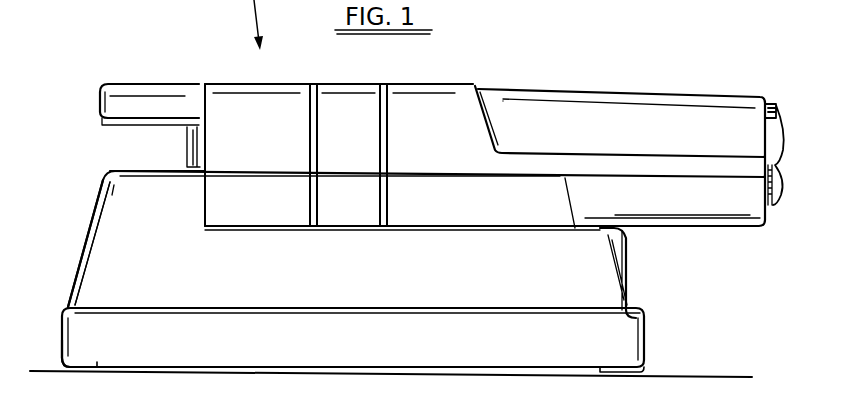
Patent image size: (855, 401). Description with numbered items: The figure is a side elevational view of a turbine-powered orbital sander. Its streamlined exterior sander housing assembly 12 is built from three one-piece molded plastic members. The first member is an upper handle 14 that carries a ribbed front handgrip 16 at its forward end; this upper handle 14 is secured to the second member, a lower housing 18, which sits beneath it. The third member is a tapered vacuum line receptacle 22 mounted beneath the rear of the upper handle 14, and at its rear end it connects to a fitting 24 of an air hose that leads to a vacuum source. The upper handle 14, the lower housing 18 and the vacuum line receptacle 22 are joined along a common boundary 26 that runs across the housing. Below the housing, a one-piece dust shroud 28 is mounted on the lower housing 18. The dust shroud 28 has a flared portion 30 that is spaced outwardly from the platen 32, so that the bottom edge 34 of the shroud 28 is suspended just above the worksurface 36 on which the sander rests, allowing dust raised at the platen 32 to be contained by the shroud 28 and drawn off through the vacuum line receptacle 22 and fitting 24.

The sander housing assembly 12 is at (145, 143).
The upper handle 14 is at (432, 84).
The ribbed front handgrip 16 is at (157, 82).
The lower housing 18 is at (227, 198).
The vacuum line receptacle 22 is at (715, 228).
The fitting 24 is at (771, 105).
The common boundary 26 is at (648, 172).
The dust shroud 28 is at (83, 257).
The flared portion 30 is at (648, 318).
The platen 32 is at (65, 366).
The bottom edge 34 is at (638, 370).
The worksurface 36 is at (712, 377).